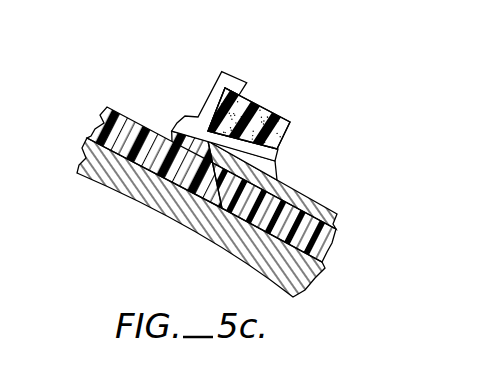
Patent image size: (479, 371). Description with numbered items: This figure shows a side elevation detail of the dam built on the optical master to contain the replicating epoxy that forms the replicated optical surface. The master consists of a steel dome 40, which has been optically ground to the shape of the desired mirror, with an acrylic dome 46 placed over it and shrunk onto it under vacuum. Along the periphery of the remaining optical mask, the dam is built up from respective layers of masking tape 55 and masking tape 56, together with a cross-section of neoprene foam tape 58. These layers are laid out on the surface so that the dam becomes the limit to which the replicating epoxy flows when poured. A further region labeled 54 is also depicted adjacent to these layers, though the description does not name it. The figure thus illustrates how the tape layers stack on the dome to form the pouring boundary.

The steel dome 40 is at (94, 157).
The acrylic dome 46 is at (104, 122).
The laminated layer 54 is at (316, 200).
The masking tape 55 is at (271, 160).
The masking tape 56 is at (215, 96).
The neoprene foam tape 58 is at (266, 117).